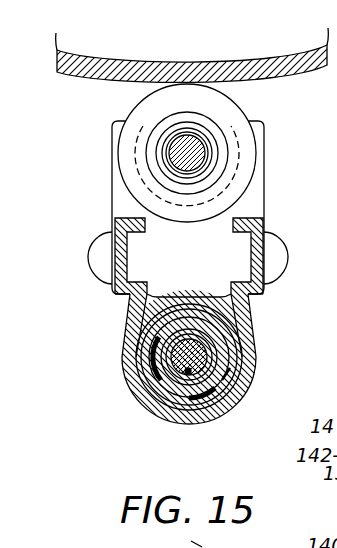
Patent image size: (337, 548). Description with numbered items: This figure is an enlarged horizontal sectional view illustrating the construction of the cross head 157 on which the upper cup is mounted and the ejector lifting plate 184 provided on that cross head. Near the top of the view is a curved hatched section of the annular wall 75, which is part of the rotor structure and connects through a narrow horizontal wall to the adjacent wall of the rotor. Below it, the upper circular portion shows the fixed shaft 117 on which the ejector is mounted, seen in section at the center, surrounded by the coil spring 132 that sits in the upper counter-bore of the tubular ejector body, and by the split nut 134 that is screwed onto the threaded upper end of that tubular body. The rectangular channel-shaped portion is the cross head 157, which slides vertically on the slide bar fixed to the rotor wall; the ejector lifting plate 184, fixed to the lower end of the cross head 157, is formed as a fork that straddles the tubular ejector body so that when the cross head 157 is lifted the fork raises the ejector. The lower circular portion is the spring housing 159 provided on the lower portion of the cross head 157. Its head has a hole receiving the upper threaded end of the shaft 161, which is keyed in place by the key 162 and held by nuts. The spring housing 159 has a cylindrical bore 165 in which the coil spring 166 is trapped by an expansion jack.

The annular wall 75 is at (291, 67).
The fixed shaft 117 is at (178, 143).
The coil spring 132 is at (200, 133).
The split nut 134 is at (252, 163).
The ejector lifting plate 184 is at (255, 200).
The cross head 157 is at (250, 307).
The spring housing 159 is at (253, 370).
The cylindrical bore 165 is at (238, 350).
The coil spring 166 is at (205, 398).
The shaft 161 is at (173, 357).
The key 162 is at (188, 372).